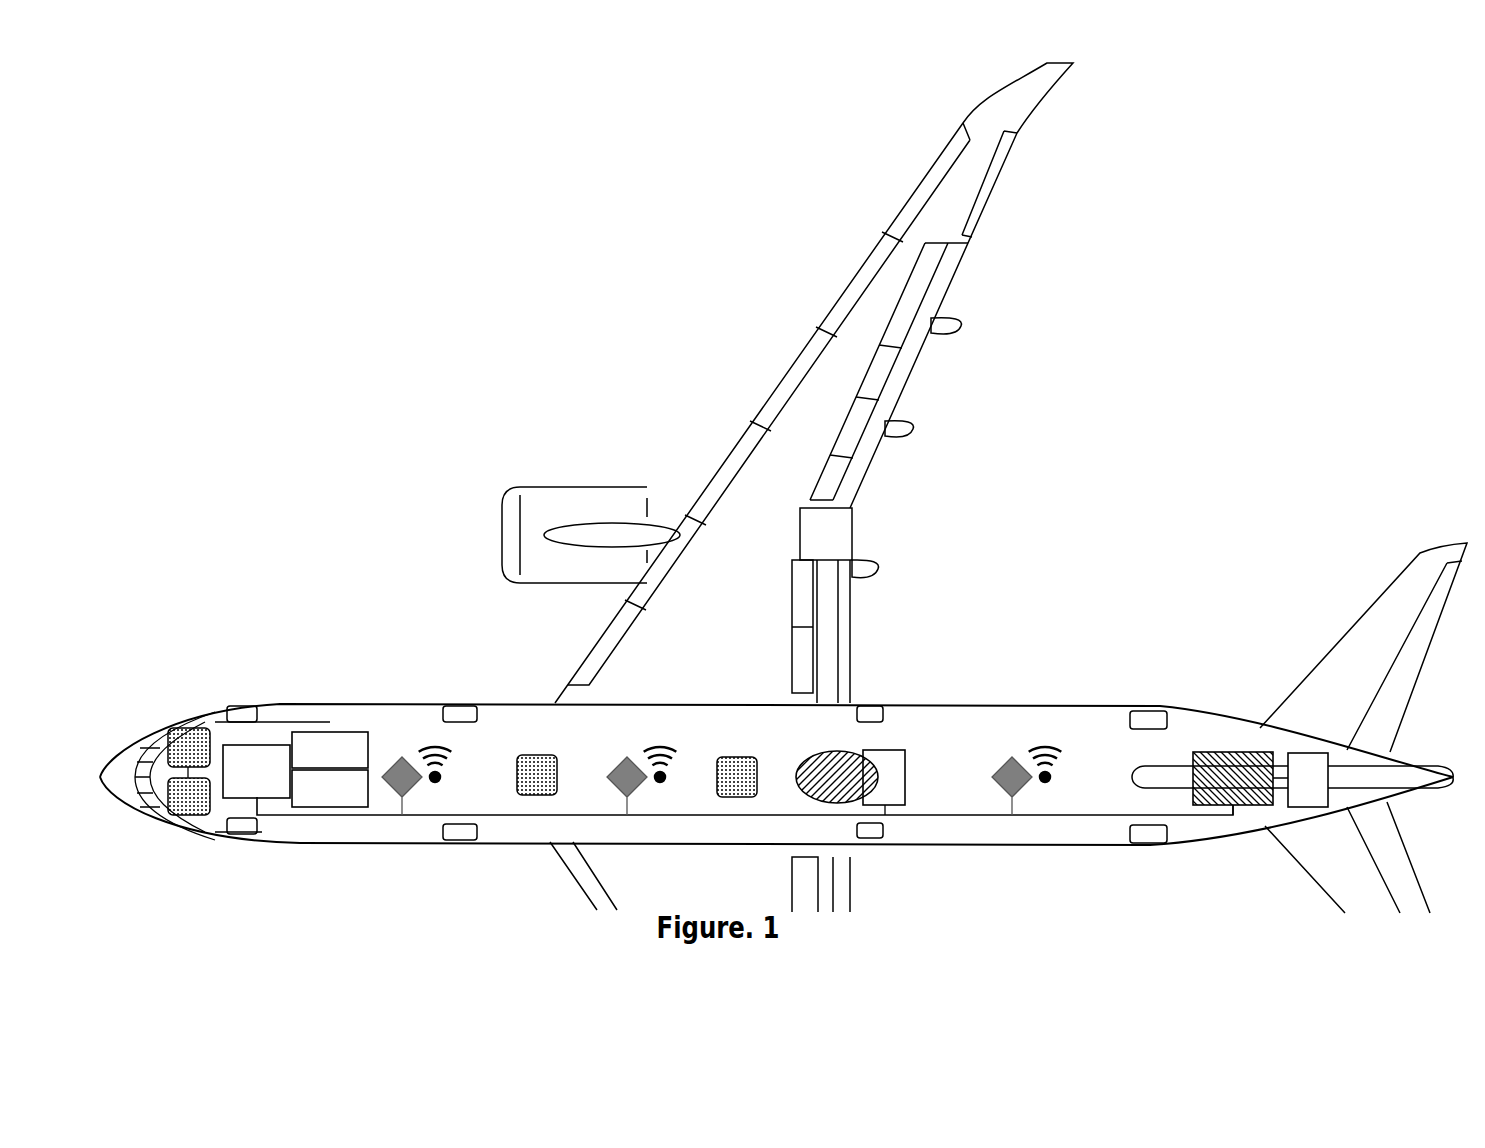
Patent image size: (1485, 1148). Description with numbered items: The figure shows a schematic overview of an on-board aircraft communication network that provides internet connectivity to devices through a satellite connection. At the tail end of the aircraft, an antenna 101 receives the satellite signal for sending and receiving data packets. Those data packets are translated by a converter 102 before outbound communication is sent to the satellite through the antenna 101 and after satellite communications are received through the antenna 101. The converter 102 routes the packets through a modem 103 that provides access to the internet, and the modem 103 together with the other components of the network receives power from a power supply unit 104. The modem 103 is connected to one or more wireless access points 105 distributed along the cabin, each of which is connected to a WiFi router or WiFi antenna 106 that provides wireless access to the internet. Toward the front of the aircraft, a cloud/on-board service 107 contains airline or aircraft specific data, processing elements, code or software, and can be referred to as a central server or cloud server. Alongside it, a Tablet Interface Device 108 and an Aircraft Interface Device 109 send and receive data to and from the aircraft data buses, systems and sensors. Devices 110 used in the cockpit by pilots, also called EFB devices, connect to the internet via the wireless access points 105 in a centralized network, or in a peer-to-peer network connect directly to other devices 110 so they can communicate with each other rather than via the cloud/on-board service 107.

The antenna 101 is at (840, 752).
The converter 102 is at (885, 750).
The modem 103 is at (1230, 752).
The power supply unit 104 is at (1308, 753).
The wireless access point 105 is at (612, 774).
The WiFi router or WiFi antenna 106 is at (650, 735).
The cloud/on-board service 107 is at (256, 771).
The Tablet Interface Device 108 is at (330, 750).
The Aircraft Interface Device 109 is at (330, 788).
The device 110 is at (737, 797).